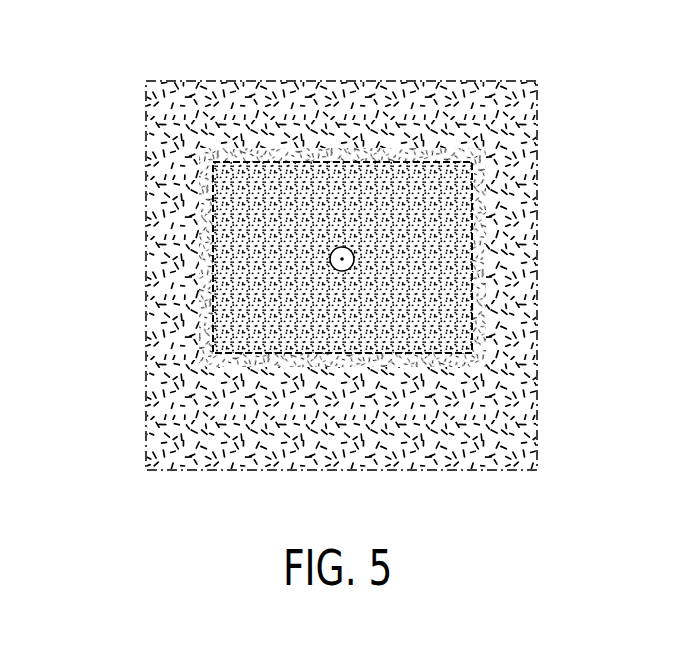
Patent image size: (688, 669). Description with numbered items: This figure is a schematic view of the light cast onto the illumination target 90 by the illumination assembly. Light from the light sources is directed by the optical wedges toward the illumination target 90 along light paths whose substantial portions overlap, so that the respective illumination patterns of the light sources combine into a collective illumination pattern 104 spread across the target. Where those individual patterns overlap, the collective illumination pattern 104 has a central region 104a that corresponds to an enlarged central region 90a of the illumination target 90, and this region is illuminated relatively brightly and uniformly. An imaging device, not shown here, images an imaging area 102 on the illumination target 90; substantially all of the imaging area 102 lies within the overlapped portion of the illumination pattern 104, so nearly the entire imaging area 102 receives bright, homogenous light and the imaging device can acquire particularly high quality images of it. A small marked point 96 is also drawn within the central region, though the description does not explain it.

The illumination target 90 is at (163, 165).
The enlarged central region of the illumination target 90a is at (446, 298).
The mark / reference point 96 is at (333, 268).
The imaging area 102 is at (240, 162).
The collective illumination pattern 104 is at (160, 278).
The central region of the collective illumination pattern 104a is at (406, 206).